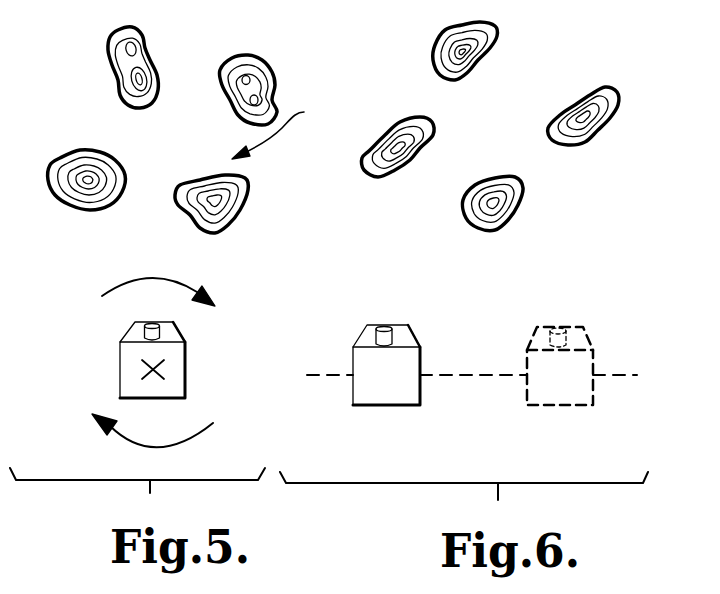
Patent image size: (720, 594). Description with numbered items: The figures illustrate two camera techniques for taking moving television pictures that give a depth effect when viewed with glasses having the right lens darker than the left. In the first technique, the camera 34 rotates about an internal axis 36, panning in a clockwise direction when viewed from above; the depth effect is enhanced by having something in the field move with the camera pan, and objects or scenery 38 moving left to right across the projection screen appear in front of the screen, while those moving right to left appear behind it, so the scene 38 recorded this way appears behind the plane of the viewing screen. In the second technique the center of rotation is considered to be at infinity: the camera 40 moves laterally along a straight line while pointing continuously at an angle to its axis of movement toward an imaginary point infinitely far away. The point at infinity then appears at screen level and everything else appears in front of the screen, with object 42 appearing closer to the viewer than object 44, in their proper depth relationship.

In FIG. 5, the camera 34 is at (185, 363).
In FIG. 5, the internal axis 36 is at (143, 373).
In FIG. 5, the scene 38 is at (278, 134).
In FIG. 6, the camera 40 is at (353, 395).
In FIG. 6, the object 42 is at (520, 205).
In FIG. 6, the object 44 is at (378, 176).